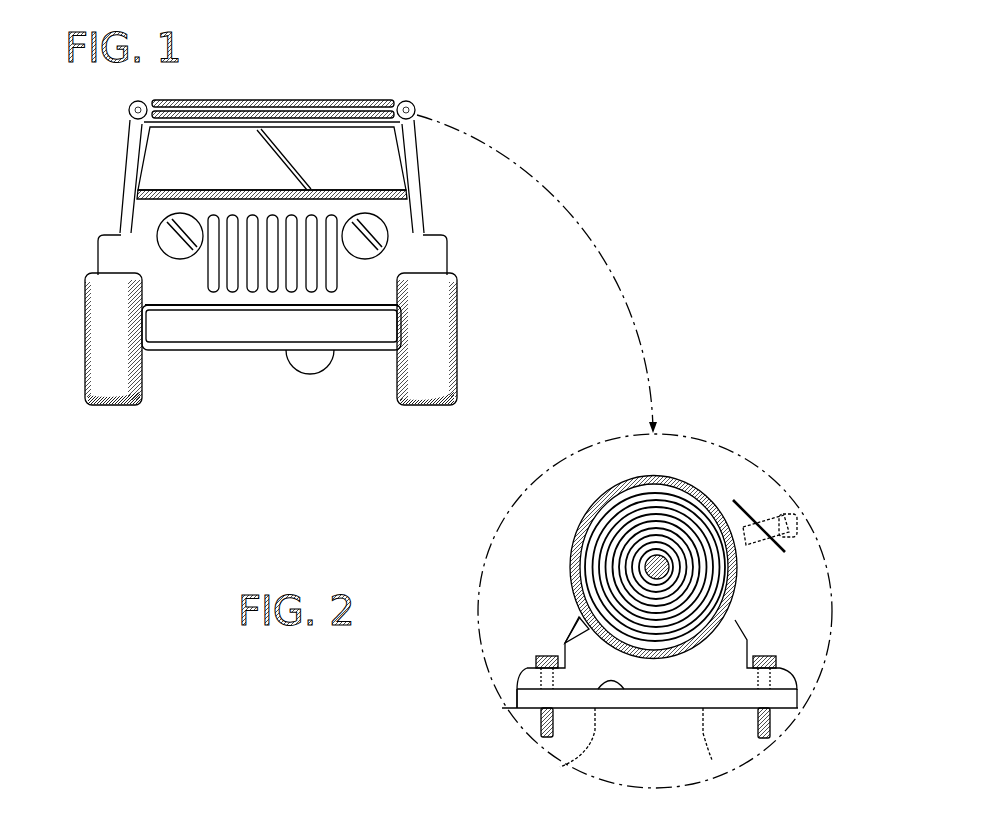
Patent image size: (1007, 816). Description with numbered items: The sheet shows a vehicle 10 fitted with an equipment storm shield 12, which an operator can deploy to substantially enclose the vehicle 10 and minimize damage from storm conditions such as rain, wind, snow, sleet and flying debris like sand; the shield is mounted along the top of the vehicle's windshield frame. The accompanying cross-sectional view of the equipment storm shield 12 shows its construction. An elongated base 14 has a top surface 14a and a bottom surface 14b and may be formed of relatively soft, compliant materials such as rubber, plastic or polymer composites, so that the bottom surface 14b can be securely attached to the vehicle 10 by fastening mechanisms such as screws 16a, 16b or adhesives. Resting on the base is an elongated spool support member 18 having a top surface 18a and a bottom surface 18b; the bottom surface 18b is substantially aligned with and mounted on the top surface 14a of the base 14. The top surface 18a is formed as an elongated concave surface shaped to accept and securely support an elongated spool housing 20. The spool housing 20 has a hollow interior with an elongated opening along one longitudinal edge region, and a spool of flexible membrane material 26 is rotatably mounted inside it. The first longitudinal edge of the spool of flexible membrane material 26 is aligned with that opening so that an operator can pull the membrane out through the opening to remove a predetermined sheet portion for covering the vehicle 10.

In FIG. 1, the vehicle 10 is at (121, 221).
In FIG. 1, the equipment storm shield 12 is at (416, 92).
In FIG. 2, the equipment storm shield 12 is at (753, 462).
In FIG. 2, the elongated base 14 is at (803, 697).
In FIG. 2, the top surface 14a is at (510, 717).
In FIG. 2, the bottom surface 14b is at (712, 760).
In FIG. 2, the screw 16a is at (517, 723).
In FIG. 2, the screw 16b is at (780, 700).
In FIG. 2, the elongated spool support member 18 is at (580, 643).
In FIG. 2, the top surface 18a is at (567, 628).
In FIG. 2, the bottom surface 18b is at (527, 673).
In FIG. 2, the elongated spool housing 20 is at (747, 574).
In FIG. 2, the spool of flexible membrane material 26 is at (580, 553).